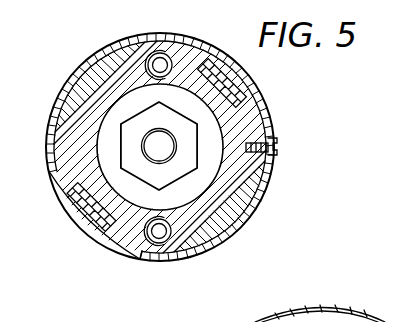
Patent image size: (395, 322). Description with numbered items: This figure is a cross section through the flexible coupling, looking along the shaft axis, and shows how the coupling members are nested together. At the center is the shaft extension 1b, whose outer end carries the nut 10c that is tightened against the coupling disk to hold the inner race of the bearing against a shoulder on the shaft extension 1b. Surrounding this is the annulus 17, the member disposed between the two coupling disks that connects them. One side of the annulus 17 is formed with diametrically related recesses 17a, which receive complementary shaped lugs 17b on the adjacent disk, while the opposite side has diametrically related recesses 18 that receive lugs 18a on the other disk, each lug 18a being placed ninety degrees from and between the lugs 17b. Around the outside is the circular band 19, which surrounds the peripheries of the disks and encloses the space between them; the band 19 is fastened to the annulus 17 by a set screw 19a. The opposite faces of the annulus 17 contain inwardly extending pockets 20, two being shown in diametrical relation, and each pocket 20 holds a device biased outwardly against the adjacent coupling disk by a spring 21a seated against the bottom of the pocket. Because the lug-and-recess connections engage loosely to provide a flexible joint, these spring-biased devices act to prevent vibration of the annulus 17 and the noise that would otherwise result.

The shaft extension 1b is at (153, 158).
The nut 10c is at (169, 163).
The annulus 17 is at (265, 177).
The recesses 17a is at (190, 255).
The lugs 17b is at (253, 218).
The recesses 18 is at (103, 252).
The lugs 18a is at (82, 220).
The circular band 19 is at (258, 92).
The set screw 19a is at (277, 139).
The pockets 20 is at (136, 256).
The spring 21a is at (172, 53).